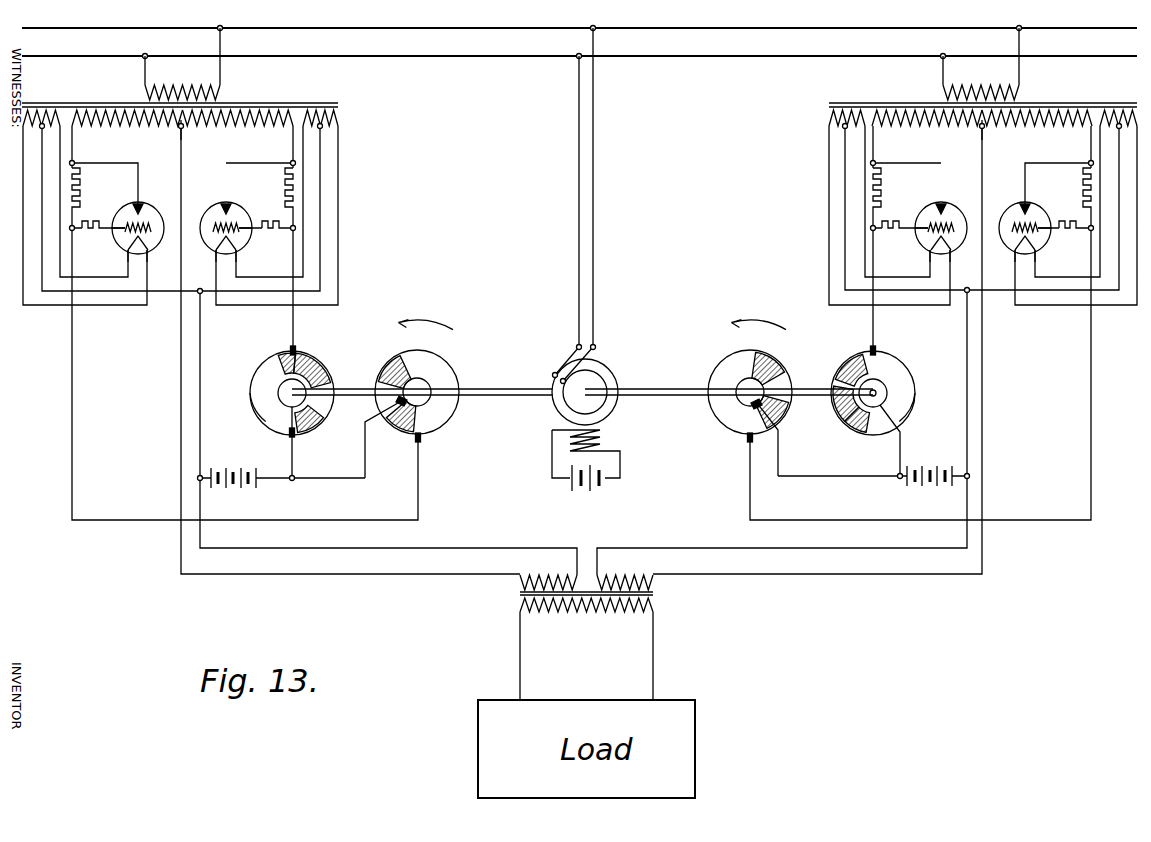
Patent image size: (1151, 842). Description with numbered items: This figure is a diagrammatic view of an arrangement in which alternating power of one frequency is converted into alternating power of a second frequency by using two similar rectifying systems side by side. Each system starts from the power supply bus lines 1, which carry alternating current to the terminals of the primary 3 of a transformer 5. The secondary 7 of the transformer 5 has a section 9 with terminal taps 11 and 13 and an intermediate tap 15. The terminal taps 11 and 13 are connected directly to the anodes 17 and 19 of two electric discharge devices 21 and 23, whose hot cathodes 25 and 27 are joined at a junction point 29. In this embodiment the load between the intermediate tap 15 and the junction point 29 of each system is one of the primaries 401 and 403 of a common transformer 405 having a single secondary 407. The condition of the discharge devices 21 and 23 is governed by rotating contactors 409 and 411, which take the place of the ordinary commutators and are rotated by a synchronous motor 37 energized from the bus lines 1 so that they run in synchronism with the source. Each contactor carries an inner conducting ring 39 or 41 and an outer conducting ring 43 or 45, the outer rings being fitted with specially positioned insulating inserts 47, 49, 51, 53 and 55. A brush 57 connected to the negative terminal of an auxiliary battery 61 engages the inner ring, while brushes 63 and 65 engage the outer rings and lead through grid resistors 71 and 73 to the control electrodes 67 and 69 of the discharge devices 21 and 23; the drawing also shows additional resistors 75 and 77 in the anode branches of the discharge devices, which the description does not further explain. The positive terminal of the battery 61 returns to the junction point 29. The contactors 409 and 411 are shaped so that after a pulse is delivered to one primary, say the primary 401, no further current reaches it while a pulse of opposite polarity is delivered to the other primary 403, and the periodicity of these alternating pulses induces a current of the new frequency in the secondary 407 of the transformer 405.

The power supply bus lines 1 is at (470, 55).
The primary 3 is at (220, 98).
The transformer 5 is at (303, 95).
The secondary 7 is at (362, 128).
The section 9 is at (132, 125).
The terminal tap 11 is at (78, 122).
The terminal tap 13 is at (290, 126).
The intermediate tap 15 is at (183, 128).
The anode 17 is at (142, 208).
The anode 19 is at (228, 208).
The electric discharge device 21 is at (119, 212).
The electric discharge device 23 is at (204, 220).
The cathode 25 is at (150, 248).
The cathode 27 is at (214, 250).
The junction point 29 is at (200, 291).
The synchronous motor 37 is at (640, 434).
The inner conducting ring 39 is at (422, 386).
The inner conducting ring 41 is at (282, 386).
The outer conducting ring 43 is at (455, 378).
The outer conducting ring 45 is at (256, 414).
The insulating insert 47 is at (400, 430).
The insulating insert 49 is at (380, 370).
The insulating insert 51 is at (283, 354).
The insulating insert 53 is at (328, 366).
The insulating insert 55 is at (300, 430).
The brush 57 is at (380, 402).
The auxiliary power source 61 is at (250, 455).
The brush 63 is at (420, 440).
The brush 65 is at (294, 348).
The control electrode 67 is at (128, 252).
The control electrode 69 is at (238, 252).
The grid resistor 71 is at (88, 235).
The grid resistor 73 is at (265, 236).
The resistor 75 is at (80, 188).
The resistor 77 is at (284, 192).
The primary 401 is at (540, 575).
The primary 403 is at (622, 575).
The common transformer 405 is at (706, 599).
The secondary 407 is at (570, 605).
The contactor 409 is at (500, 437).
The contactor 411 is at (237, 397).